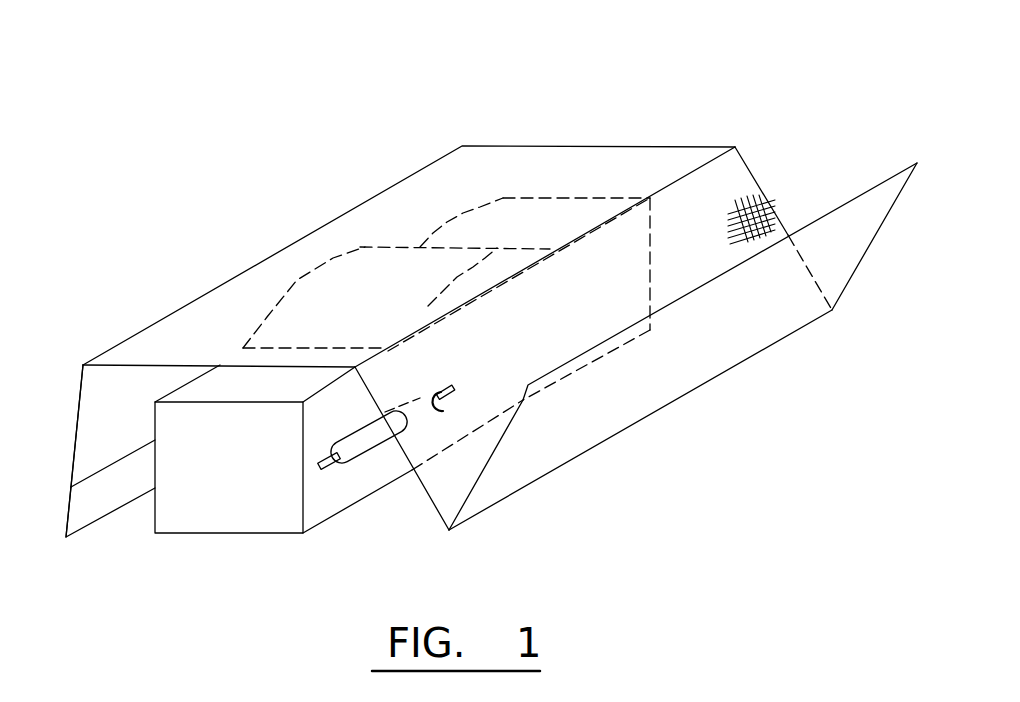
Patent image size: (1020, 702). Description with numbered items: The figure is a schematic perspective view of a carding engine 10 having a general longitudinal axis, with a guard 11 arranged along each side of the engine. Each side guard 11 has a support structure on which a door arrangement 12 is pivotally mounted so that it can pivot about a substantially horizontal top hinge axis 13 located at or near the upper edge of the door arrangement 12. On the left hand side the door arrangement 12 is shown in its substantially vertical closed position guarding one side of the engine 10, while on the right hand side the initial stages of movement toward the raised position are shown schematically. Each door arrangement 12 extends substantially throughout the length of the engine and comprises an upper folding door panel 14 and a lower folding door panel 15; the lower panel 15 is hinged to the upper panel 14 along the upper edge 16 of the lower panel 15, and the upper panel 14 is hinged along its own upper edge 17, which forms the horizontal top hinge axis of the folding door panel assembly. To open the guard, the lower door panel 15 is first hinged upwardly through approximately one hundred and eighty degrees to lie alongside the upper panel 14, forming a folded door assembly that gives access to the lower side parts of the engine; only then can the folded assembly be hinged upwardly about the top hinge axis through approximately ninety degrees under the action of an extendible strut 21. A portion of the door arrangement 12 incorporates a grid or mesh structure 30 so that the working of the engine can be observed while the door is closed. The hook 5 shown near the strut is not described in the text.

The hook 5 is at (408, 423).
The carding engine 10 is at (210, 492).
The guard 11 is at (72, 383).
The door arrangement 12 is at (687, 260).
The top hinge axis 13 is at (747, 138).
The upper folding door panel 14 is at (125, 430).
The lower folding door panel 15 is at (125, 506).
The upper edge of the lower panel 16 is at (613, 435).
The upper edge of the upper panel 17 is at (677, 192).
The extendible strut 21 is at (363, 448).
The grid or mesh structure 30 is at (780, 202).